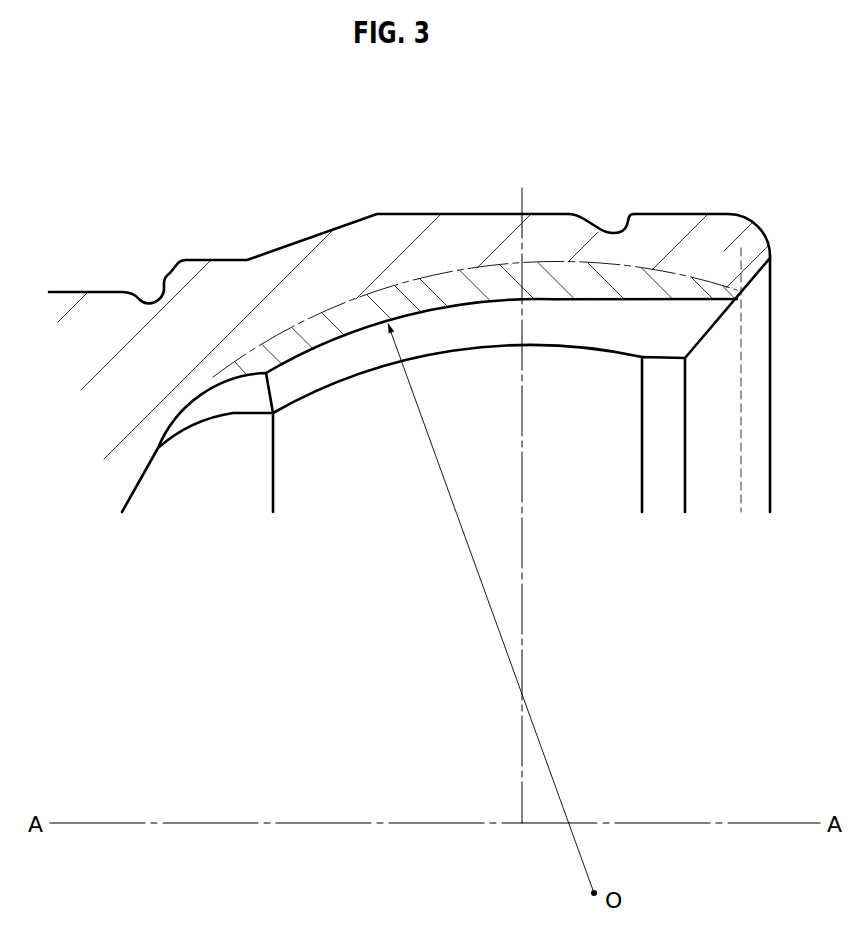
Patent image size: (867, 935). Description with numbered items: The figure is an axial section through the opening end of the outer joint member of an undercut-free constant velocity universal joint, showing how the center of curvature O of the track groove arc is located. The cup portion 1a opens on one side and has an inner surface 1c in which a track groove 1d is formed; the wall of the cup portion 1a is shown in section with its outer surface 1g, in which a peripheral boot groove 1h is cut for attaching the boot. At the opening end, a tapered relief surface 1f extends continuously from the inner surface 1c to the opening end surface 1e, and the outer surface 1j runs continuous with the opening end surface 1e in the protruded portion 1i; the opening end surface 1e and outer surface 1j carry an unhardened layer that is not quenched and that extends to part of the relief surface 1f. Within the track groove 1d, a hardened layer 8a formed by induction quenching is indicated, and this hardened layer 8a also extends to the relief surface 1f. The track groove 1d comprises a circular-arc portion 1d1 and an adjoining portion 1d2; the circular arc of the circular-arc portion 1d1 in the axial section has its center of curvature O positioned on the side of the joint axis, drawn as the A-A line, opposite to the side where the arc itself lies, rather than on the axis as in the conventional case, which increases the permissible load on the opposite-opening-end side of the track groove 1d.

The cup portion 1a is at (398, 204).
The inner surface 1c is at (588, 352).
The track groove 1d is at (586, 302).
The circular-arc portion 1d1 is at (334, 342).
The straight portion of seal surface 1d2 is at (657, 299).
The opening end surface 1e is at (771, 254).
The tapered relief surface 1f is at (720, 321).
The outer surface 1g is at (645, 213).
The boot groove 1h is at (610, 232).
The protruded portion 1i is at (763, 236).
The outer surface 1j is at (753, 222).
The hardened layer 8a is at (450, 285).